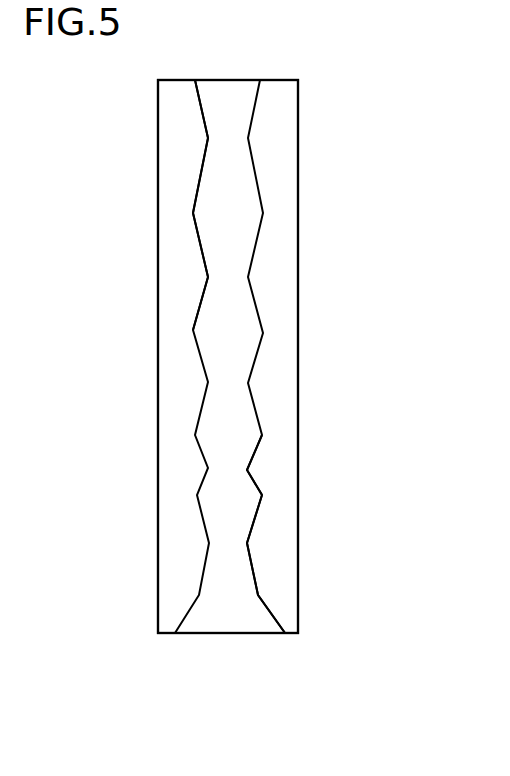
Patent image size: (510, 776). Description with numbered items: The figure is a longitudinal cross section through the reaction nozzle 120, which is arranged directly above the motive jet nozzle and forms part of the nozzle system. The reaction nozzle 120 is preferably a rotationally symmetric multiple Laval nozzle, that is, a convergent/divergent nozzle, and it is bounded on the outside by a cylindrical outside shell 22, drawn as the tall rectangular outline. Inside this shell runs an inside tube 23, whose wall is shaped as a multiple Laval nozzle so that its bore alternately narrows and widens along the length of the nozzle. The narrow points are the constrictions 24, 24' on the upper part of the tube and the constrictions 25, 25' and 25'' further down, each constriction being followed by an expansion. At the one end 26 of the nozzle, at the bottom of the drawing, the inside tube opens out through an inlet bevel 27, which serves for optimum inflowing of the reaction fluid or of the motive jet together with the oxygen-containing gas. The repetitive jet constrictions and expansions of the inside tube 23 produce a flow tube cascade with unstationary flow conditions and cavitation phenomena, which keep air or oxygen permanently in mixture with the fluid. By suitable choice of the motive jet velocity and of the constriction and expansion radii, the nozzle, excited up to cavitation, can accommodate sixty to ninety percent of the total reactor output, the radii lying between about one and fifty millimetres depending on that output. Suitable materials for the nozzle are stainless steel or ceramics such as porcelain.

The reaction nozzle 120 is at (326, 199).
The cylindrical outside shell 22 is at (158, 435).
The inside tube 23 is at (193, 330).
The constriction 24 is at (151, 146).
The constriction 24' is at (152, 271).
The constriction 25 is at (307, 356).
The constriction 25' is at (309, 465).
The constriction 25'' is at (313, 545).
The one end 26 is at (231, 640).
The inlet bevel 27 is at (272, 615).